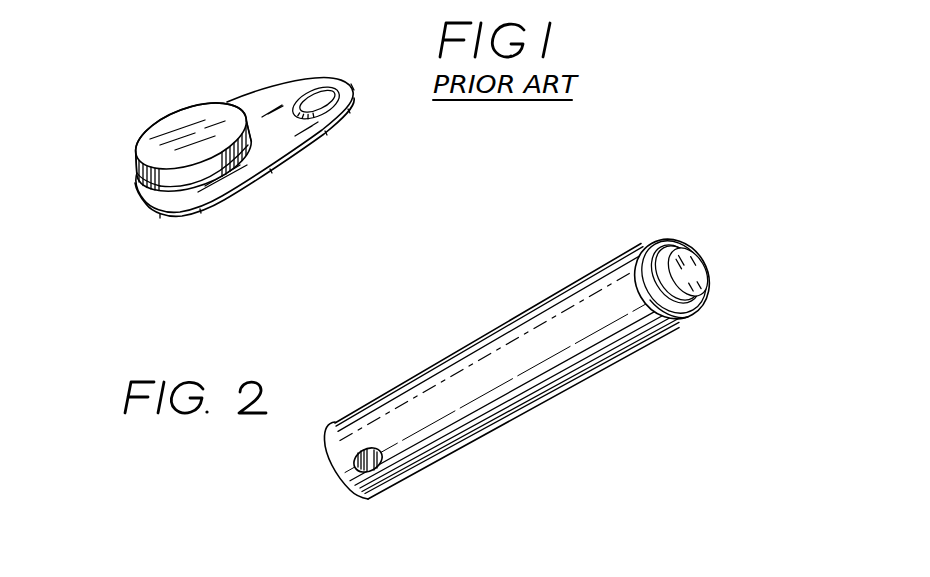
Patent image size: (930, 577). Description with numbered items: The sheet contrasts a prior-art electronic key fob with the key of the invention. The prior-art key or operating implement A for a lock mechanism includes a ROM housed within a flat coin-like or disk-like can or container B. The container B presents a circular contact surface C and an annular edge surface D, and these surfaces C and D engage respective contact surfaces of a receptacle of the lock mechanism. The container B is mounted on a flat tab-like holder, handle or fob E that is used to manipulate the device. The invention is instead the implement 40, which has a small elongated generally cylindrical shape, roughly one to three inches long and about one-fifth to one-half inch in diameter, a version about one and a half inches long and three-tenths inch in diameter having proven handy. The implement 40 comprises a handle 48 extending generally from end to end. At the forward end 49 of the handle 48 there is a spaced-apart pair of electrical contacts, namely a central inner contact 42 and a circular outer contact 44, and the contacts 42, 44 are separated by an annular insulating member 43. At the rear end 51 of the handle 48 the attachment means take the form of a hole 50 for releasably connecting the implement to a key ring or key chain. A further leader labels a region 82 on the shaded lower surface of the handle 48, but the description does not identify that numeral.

In FIG. 1, the key or operating implement A is at (195, 126).
In FIG. 1, the container B is at (147, 127).
In FIG. 1, the circular contact surface C is at (136, 170).
In FIG. 1, the annular edge surface D is at (170, 172).
In FIG. 1, the fob E is at (273, 143).
In FIG. 2, the implement 40 is at (440, 348).
In FIG. 2, the central inner contact 42 is at (692, 275).
In FIG. 2, the annular insulating member 43 is at (672, 243).
In FIG. 2, the circular outer contact 44 is at (687, 317).
In FIG. 2, the handle 48 is at (475, 412).
In FIG. 2, the forward end 49 is at (638, 260).
In FIG. 2, the hole 50 is at (372, 468).
In FIG. 2, the rear end 51 is at (338, 453).
In FIG. 2, the shank surface 82 is at (580, 365).